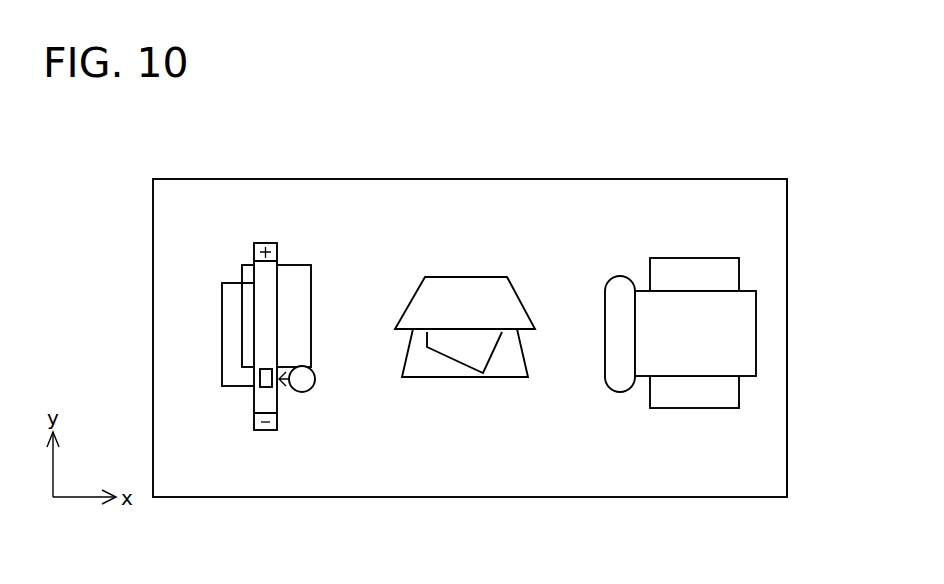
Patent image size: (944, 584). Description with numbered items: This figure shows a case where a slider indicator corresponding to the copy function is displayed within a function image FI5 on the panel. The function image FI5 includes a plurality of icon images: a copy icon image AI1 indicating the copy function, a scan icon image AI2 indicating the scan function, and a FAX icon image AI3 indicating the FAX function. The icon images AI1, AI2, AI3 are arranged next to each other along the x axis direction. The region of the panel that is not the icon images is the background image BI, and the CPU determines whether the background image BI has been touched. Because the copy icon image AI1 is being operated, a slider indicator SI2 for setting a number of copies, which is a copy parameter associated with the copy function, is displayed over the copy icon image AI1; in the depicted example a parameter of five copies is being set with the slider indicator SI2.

The function image FI5 is at (764, 172).
The background image BI is at (775, 227).
The copy icon image AI1 is at (300, 300).
The scan icon image AI2 is at (455, 290).
The FAX icon image AI3 is at (670, 297).
The slider indicator SI2 is at (263, 335).